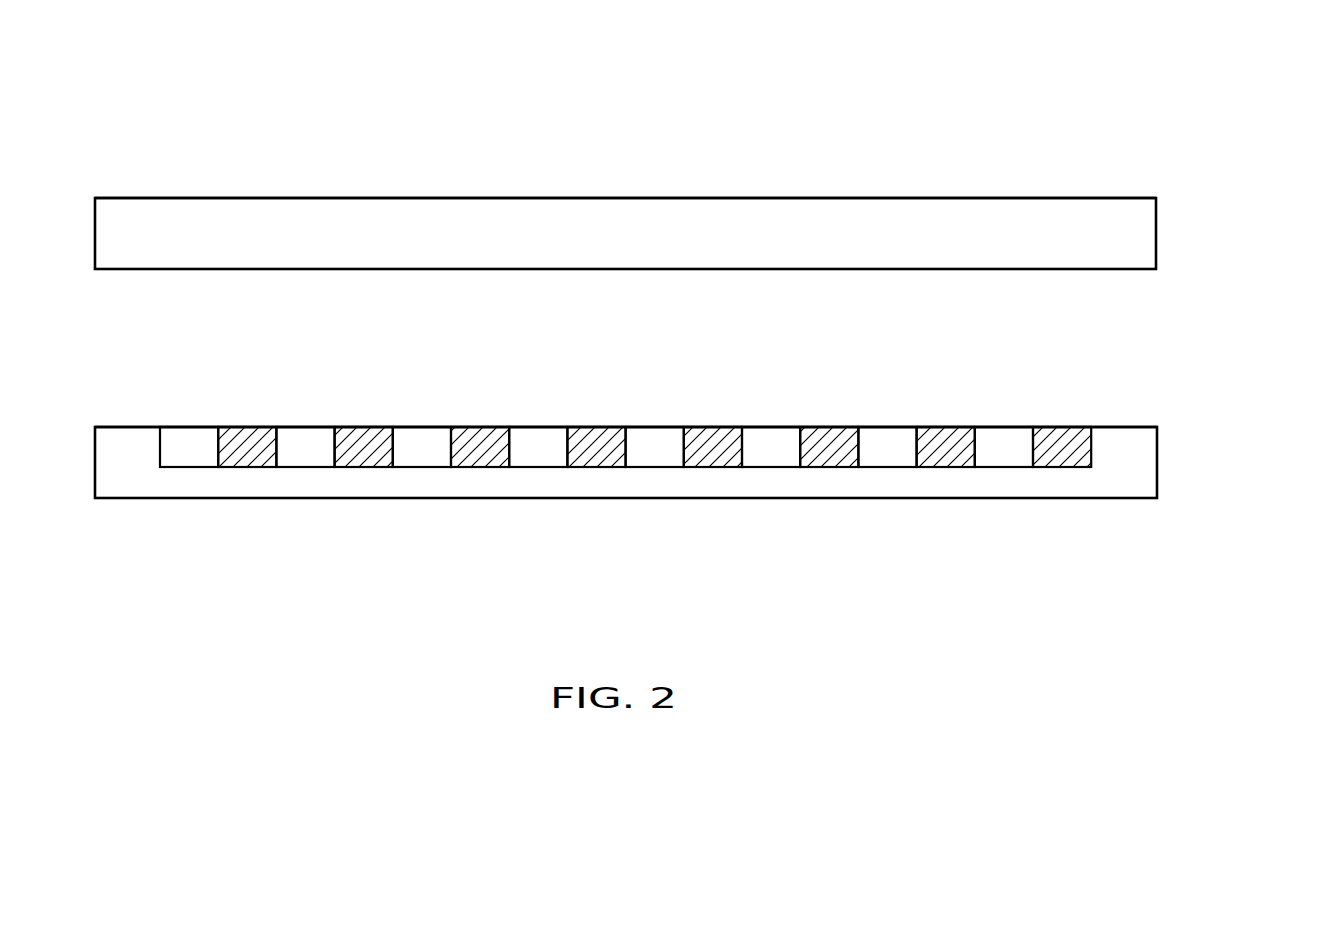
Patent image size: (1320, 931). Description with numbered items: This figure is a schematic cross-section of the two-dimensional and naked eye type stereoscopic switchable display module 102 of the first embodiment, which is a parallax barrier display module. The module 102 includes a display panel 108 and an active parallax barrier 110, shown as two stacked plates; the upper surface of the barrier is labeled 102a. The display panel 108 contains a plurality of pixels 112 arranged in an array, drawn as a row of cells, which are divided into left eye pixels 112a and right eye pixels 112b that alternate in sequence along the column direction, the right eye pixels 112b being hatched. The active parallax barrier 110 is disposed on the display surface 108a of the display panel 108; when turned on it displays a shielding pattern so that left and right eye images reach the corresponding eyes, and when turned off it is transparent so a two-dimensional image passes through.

The two-dimensional and naked eye type stereoscopic switchable display module 102 is at (1108, 108).
The top surface of cover plate 102a is at (1133, 198).
The active parallax barrier 110 is at (646, 248).
The display panel 108 is at (1130, 475).
The display surface 108a is at (1133, 427).
The pixels 112 is at (625, 388).
The left eye pixels 112a is at (189, 435).
The right eye pixels 112b is at (249, 435).